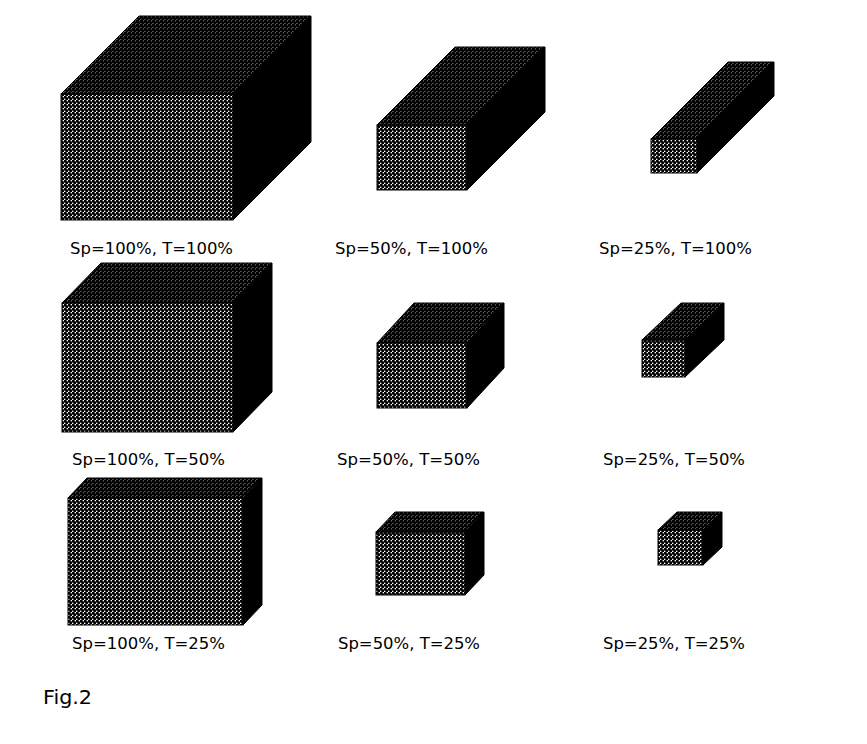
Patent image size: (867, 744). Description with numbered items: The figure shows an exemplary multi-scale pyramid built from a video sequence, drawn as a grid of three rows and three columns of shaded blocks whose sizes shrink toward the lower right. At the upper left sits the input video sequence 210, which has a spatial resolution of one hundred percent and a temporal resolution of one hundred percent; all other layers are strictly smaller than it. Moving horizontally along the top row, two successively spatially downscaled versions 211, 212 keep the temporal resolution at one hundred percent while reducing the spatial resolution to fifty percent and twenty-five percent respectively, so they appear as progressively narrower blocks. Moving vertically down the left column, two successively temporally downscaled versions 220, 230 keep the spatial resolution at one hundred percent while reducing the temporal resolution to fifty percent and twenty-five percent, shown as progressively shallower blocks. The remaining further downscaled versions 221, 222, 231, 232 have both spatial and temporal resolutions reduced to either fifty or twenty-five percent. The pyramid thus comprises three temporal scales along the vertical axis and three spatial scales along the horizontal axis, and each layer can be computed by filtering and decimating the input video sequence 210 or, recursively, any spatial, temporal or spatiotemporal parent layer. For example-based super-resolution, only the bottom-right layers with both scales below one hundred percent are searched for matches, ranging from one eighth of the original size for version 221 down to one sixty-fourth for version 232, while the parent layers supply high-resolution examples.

The input video sequence 210 is at (191, 118).
The spatially downscaled version 211 is at (461, 119).
The spatially downscaled version 212 is at (719, 117).
The temporally downscaled version 220 is at (184, 347).
The further downscaled version 221 is at (458, 355).
The further downscaled version 222 is at (694, 343).
The temporally downscaled version 230 is at (187, 551).
The further downscaled version 231 is at (454, 553).
The further downscaled version 232 is at (715, 538).